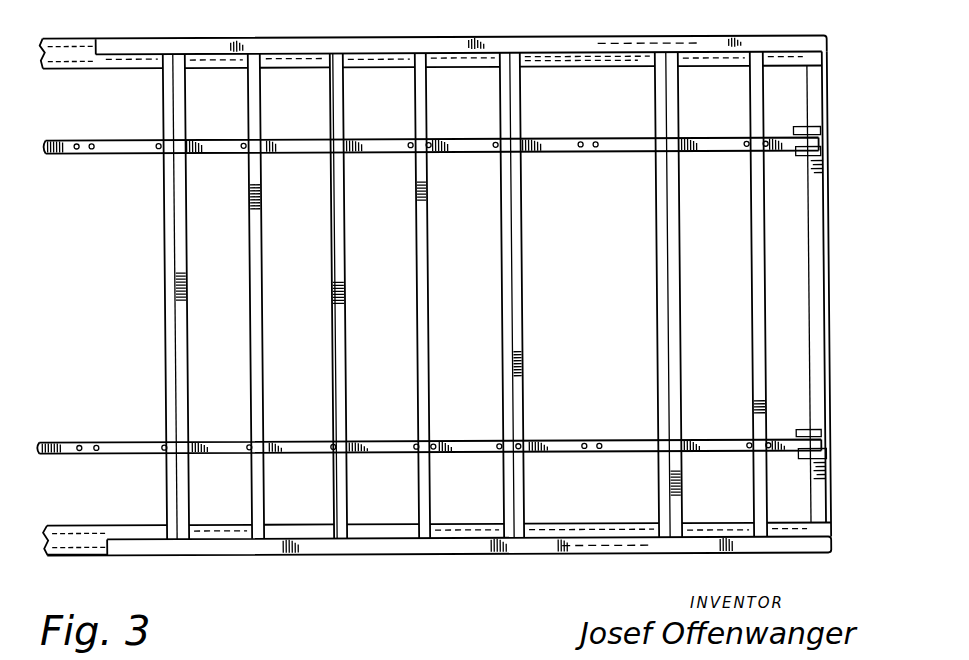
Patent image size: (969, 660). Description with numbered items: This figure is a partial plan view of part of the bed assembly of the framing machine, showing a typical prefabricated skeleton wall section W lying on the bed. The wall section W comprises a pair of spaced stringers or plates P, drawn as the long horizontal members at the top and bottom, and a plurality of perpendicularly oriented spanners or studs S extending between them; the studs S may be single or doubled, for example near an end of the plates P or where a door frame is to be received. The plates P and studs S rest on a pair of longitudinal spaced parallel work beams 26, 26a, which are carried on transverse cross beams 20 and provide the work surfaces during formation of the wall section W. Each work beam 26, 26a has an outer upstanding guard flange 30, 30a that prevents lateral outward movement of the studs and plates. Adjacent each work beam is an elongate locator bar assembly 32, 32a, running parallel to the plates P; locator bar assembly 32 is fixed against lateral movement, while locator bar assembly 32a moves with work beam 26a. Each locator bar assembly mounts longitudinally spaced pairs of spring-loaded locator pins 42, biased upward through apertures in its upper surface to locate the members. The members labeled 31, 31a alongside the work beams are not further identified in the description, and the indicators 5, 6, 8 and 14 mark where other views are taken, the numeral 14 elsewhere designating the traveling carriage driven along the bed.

The transverse cross beam 20 is at (829, 320).
The work beam 26 is at (66, 54).
The work beam 26a is at (103, 534).
The guard flange 30 is at (428, 36).
The guard flange 30a is at (420, 554).
The upper channel 31 is at (91, 63).
The lower channel 31a is at (135, 527).
The locator bar assembly 32 is at (121, 152).
The locator bar assembly 32a is at (98, 440).
The spring-loaded locator pin 42 is at (410, 150).
The stud S is at (417, 312).
The wall section W is at (159, 283).
The plate P is at (625, 40).
The section line 5- 5 is at (778, 147).
The section line 6- 6 is at (540, 47).
The section line 8- 8 is at (852, 68).
The traveling carriage 14 is at (398, 174).